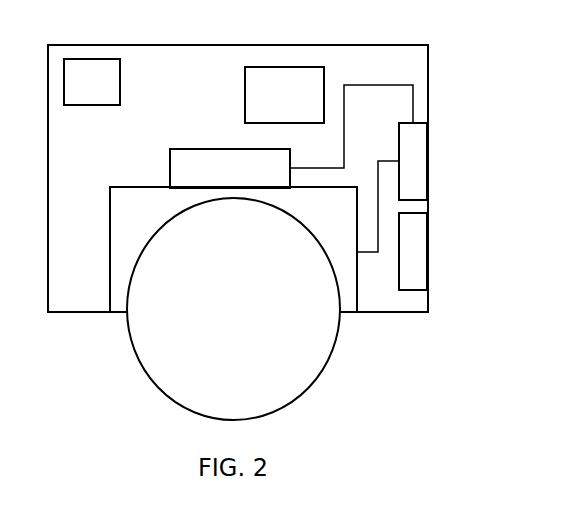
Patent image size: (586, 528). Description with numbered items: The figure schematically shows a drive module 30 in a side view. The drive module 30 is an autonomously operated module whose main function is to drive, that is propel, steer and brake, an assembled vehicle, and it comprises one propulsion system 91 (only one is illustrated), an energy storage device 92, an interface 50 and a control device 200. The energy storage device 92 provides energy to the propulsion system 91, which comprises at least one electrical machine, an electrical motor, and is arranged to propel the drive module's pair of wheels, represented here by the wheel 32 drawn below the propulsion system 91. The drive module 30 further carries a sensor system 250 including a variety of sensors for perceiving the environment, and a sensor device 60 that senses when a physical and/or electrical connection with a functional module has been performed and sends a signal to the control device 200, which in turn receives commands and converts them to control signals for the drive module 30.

The drive module 30 is at (428, 70).
The lens 32 is at (323, 372).
The interface 50 is at (428, 157).
The sensor device 60 is at (428, 252).
The propulsion system 91 is at (125, 187).
The energy storage device 92 is at (216, 182).
The control device 200 is at (73, 94).
The sensor system 250 is at (266, 109).